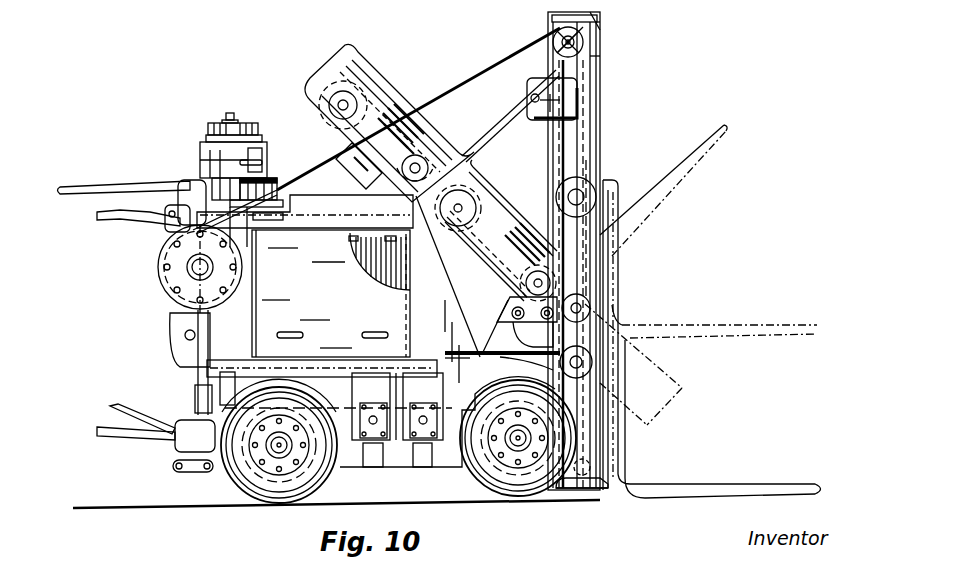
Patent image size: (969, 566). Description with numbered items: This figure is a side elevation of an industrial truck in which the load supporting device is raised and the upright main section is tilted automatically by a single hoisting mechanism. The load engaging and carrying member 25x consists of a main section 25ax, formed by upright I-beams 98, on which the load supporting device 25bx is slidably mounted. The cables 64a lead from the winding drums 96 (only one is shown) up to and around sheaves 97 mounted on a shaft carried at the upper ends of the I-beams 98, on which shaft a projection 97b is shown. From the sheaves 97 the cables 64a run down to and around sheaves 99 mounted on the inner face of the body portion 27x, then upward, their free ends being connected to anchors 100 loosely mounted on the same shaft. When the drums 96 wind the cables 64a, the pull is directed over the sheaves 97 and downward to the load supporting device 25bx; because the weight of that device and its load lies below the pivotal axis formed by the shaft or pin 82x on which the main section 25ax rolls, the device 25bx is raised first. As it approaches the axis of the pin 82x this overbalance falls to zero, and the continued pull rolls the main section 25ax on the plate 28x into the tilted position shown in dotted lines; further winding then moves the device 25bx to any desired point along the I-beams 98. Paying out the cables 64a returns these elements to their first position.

The cables 64a is at (418, 109).
The sheaves 97 is at (553, 50).
The pulley shaft 97b is at (600, 30).
The anchors 100 is at (601, 56).
The I-beams 98 is at (600, 109).
The main section 25ax is at (583, 171).
The shaft or pin 82x is at (583, 298).
The plate 28x is at (502, 343).
The body portion 27x is at (622, 424).
The load engaging and carrying member 25x is at (629, 335).
The load supporting device 25bx is at (727, 481).
The sheaves 99 is at (588, 493).
The drums 96 is at (160, 273).